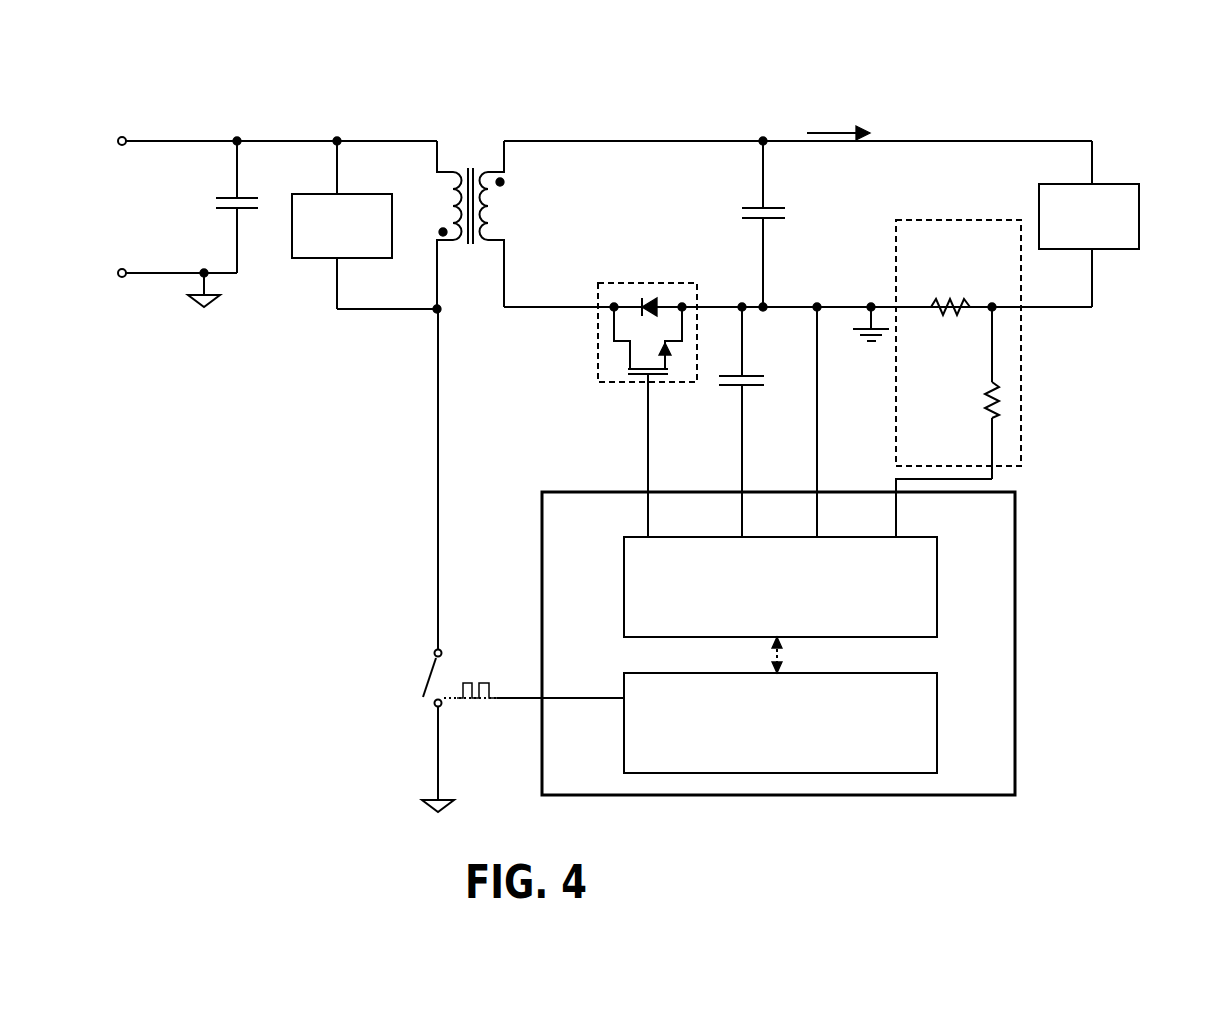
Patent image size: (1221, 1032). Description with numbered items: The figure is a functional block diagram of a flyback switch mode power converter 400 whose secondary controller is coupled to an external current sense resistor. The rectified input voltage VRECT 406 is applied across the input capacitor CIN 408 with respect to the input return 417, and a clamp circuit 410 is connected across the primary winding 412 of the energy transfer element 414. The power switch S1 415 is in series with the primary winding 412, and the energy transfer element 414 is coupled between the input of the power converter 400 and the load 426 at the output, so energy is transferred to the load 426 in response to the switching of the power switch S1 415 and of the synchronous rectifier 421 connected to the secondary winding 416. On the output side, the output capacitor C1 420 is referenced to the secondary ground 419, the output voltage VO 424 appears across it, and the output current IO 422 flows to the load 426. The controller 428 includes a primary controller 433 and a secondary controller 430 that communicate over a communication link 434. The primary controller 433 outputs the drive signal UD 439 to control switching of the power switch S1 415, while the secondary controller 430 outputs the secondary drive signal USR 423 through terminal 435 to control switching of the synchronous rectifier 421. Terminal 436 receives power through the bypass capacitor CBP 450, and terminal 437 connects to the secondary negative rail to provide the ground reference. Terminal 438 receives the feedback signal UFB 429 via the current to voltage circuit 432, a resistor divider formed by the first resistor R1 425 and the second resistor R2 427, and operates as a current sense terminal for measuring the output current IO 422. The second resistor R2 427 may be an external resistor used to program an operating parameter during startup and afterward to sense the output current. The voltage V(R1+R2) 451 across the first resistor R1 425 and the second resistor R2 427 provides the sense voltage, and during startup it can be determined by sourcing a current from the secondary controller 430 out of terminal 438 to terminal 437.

The power converter 400 is at (1205, 63).
The rectified input voltage VRECT 406 is at (193, 186).
The input capacitor CIN 408 is at (247, 222).
The clamp circuit 410 is at (312, 268).
The primary winding 412 is at (437, 195).
The energy transfer element 414 is at (473, 213).
The power switch S1 415 is at (378, 694).
The secondary winding 416 is at (506, 196).
The input return 417 is at (200, 303).
The secondary ground 419 is at (853, 330).
The output capacitor C1 420 is at (708, 196).
The synchronous rectifier 421 is at (658, 280).
The output current IO 422 is at (853, 118).
The secondary drive signal USR 423 is at (595, 447).
The output voltage VO 424 is at (827, 205).
The first resistor R1 425 is at (950, 342).
The load 426 is at (1122, 170).
The second resistor R2 427 is at (966, 416).
The controller 428 is at (819, 643).
The feedback signal UFB 429 is at (1143, 281).
The secondary controller 430 is at (938, 578).
The current to voltage circuit 432 is at (994, 378).
The primary controller 433 is at (938, 701).
The communication link 434 is at (768, 654).
The terminal 435 is at (638, 513).
The terminal 436 is at (738, 526).
The terminal 437 is at (822, 530).
The terminal 438 is at (900, 530).
The drive signal UD 439 is at (584, 676).
The bypass capacitor CBP 450 is at (791, 373).
The voltage V(R1+R2) 451 is at (952, 268).